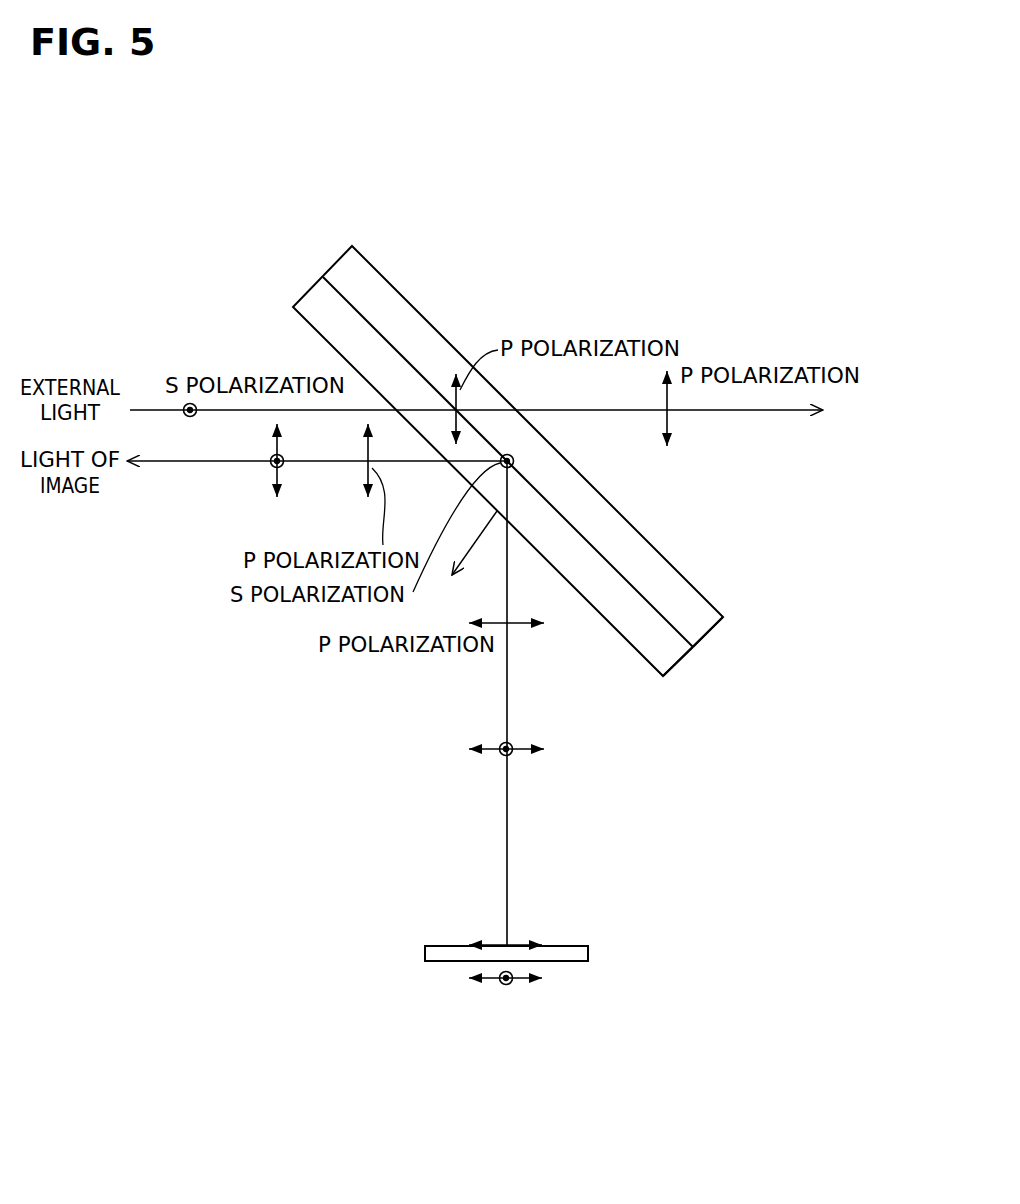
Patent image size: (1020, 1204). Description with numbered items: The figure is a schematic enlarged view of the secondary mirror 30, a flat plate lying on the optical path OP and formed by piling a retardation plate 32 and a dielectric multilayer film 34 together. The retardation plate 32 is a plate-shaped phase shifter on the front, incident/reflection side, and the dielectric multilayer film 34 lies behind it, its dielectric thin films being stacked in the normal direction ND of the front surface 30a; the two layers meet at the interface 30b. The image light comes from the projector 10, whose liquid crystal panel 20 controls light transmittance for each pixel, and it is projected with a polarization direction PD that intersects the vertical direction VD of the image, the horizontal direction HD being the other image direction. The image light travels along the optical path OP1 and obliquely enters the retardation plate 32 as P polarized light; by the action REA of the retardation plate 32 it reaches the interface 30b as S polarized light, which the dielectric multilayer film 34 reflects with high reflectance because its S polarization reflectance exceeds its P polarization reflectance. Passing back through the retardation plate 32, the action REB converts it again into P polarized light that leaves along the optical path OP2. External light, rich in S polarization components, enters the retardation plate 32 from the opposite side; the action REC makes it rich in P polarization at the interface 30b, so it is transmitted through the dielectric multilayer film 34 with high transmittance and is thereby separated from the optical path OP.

The projector 10 is at (545, 922).
The liquid crystal panel 20 is at (506, 953).
The secondary mirror 30 is at (541, 493).
The front surface 30a is at (617, 634).
The interface 30b is at (630, 578).
The retardation plate 32 is at (670, 670).
The dielectric multilayer film 34 is at (710, 631).
The action of the retardation plate on external light REC is at (393, 410).
The action of the retardation plate on reflected image light REB is at (447, 455).
The action of the retardation plate on incident image light REA is at (513, 468).
The normal direction ND is at (466, 560).
The vertical direction VD is at (283, 466).
The horizontal direction HD is at (281, 476).
The polarization direction PD is at (513, 944).
The optical path OP is at (317, 703).
The first optical path OP1 is at (506, 853).
The second optical path OP2 is at (195, 463).